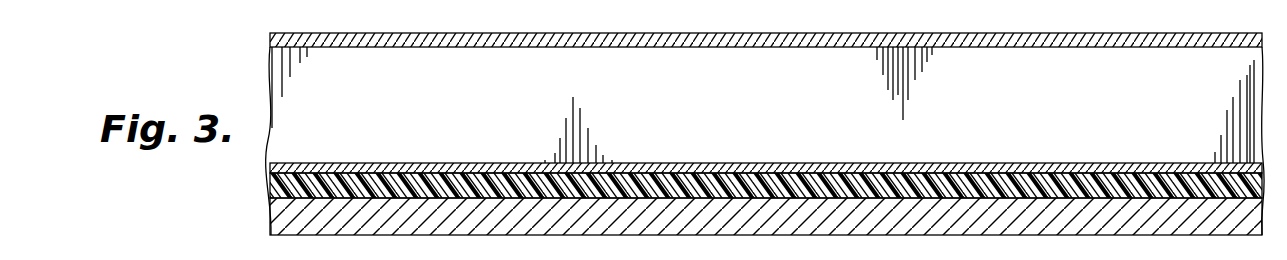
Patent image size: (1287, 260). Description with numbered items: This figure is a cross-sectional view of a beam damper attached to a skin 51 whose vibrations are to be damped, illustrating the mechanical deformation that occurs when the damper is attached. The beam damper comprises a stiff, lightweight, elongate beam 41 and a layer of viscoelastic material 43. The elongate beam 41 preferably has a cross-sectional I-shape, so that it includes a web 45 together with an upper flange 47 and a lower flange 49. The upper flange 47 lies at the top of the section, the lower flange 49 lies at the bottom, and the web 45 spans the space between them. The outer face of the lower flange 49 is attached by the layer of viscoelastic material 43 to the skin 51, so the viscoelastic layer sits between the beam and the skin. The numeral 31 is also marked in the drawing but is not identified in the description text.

The cell 31 is at (644, 5).
The beam 41 is at (719, 29).
The layer of viscoelastic material 43 is at (653, 188).
The web 45 is at (957, 68).
The upper flange 47 is at (832, 40).
The lower flange 49 is at (882, 170).
The skin 51 is at (872, 218).